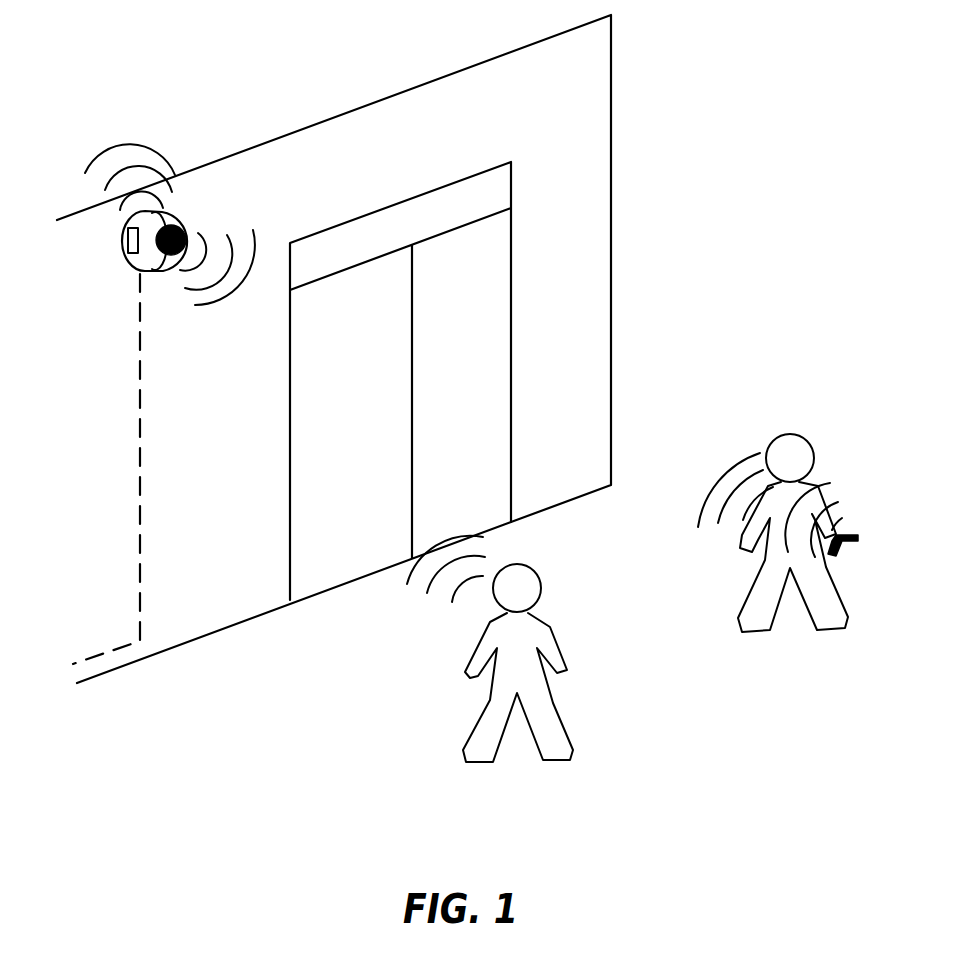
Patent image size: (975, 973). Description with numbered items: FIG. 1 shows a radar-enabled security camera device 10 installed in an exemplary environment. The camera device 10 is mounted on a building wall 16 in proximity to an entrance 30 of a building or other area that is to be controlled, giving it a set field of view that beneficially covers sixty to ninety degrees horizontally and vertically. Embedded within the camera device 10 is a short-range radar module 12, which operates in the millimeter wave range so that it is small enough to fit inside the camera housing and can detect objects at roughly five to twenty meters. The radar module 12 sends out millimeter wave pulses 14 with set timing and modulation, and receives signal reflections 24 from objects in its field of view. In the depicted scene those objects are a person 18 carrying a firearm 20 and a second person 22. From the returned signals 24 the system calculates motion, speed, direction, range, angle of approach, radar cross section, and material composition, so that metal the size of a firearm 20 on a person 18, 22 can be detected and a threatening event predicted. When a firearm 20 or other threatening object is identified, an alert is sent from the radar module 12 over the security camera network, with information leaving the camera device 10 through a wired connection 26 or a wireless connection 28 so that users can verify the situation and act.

The camera device 10 is at (120, 272).
The short-range radar module 12 is at (113, 245).
The millimeter wave pulses 14 is at (225, 300).
The building wall 16 is at (611, 130).
The person 18 is at (848, 617).
The firearm 20 is at (858, 536).
The person 22 is at (565, 658).
The signal reflections 24 is at (407, 582).
The wired connection 26 is at (140, 472).
The wireless connection 28 is at (150, 147).
The entrance 30 is at (511, 275).